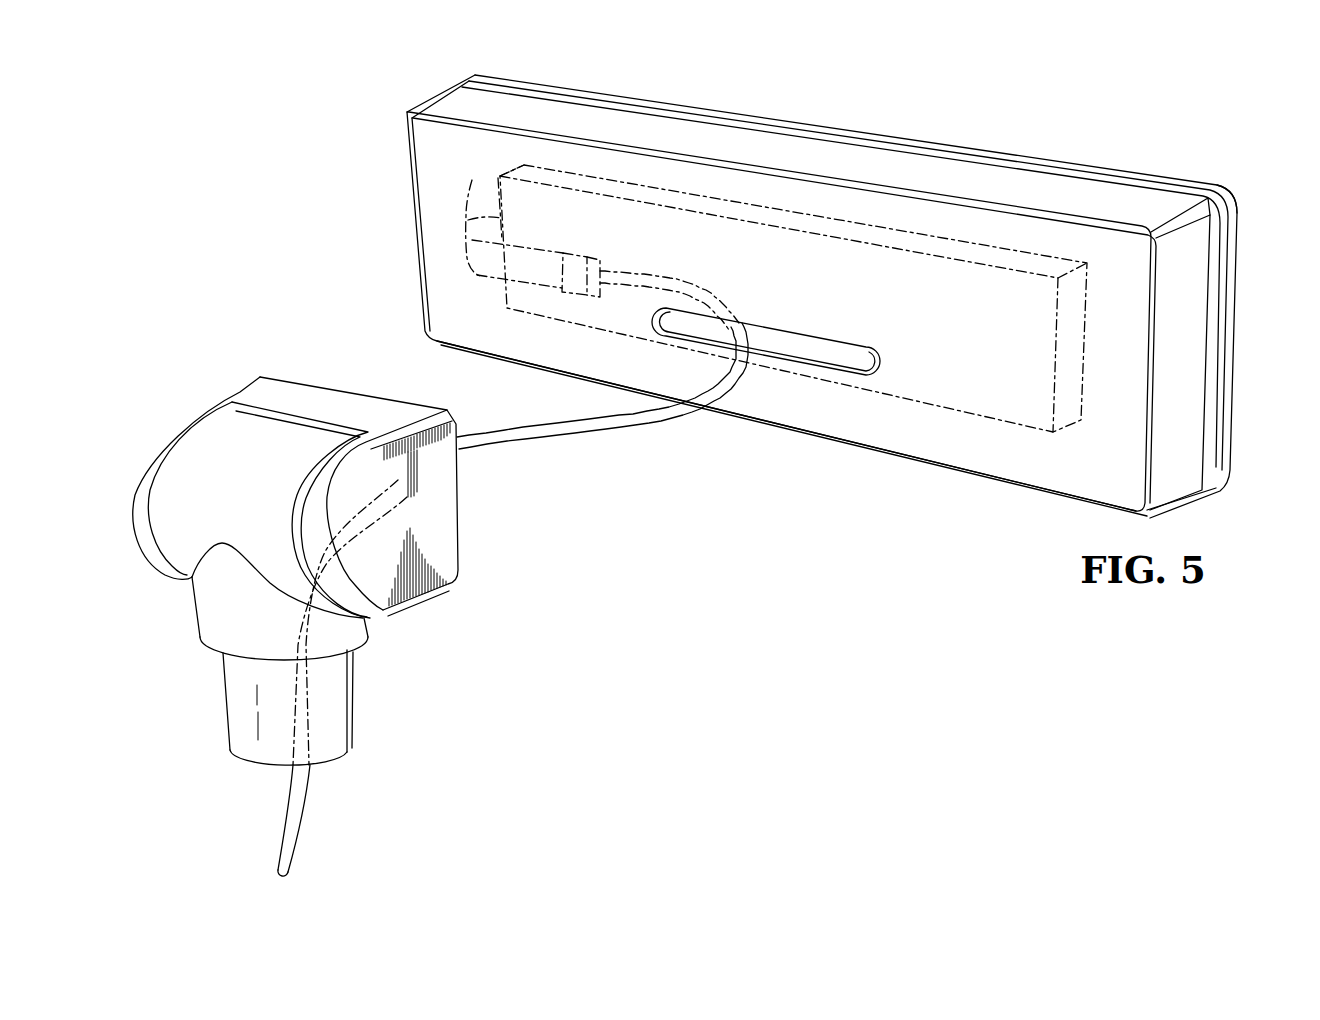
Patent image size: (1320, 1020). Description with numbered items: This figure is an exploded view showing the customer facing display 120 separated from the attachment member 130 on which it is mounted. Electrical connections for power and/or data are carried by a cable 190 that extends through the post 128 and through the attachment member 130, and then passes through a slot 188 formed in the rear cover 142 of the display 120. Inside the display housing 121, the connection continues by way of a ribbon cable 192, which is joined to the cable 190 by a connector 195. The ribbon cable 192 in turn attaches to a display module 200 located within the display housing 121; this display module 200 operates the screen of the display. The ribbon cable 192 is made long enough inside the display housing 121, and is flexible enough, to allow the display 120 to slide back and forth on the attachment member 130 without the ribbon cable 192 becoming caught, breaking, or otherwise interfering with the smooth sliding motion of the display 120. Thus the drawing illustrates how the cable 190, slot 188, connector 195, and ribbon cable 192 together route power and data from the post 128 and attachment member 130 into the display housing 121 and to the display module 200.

The display 120 is at (1061, 120).
The display housing 121 is at (1228, 189).
The post 128 is at (222, 699).
The attachment member 130 is at (205, 399).
The rear cover 142 is at (802, 412).
The slot 188 is at (866, 348).
The cable 190 is at (312, 813).
The ribbon cable 192 is at (503, 220).
The connector 195 is at (584, 253).
The display module 200 is at (1062, 427).